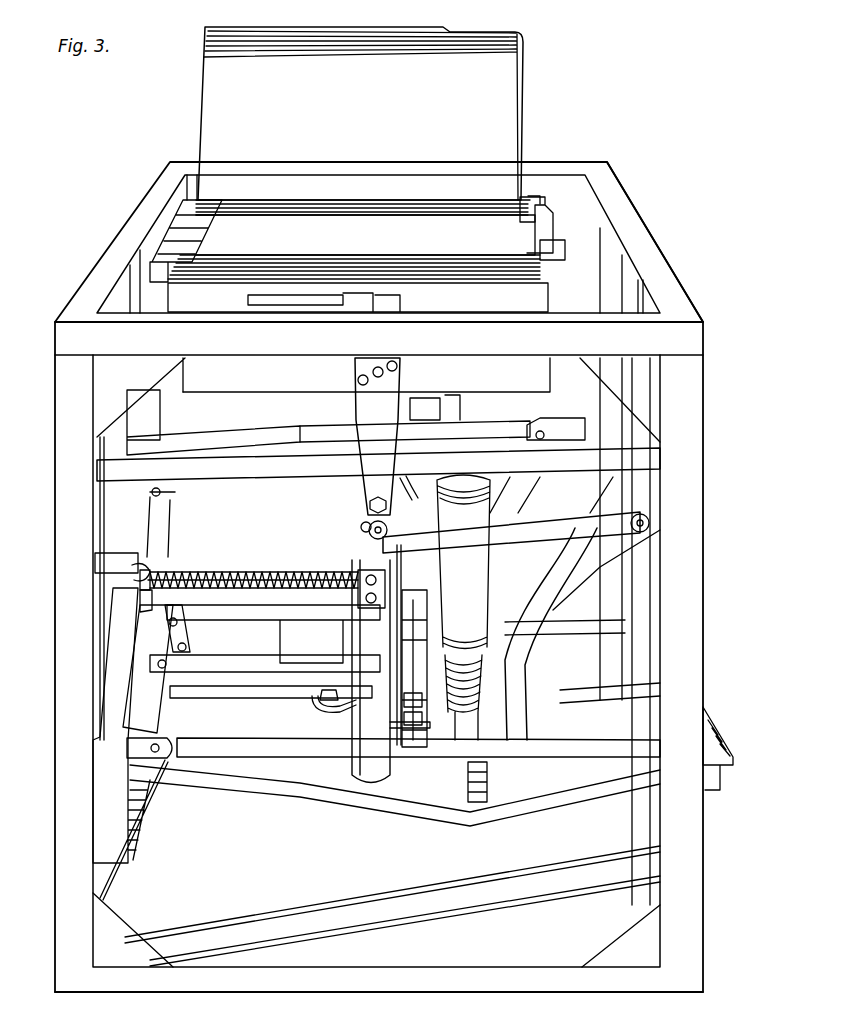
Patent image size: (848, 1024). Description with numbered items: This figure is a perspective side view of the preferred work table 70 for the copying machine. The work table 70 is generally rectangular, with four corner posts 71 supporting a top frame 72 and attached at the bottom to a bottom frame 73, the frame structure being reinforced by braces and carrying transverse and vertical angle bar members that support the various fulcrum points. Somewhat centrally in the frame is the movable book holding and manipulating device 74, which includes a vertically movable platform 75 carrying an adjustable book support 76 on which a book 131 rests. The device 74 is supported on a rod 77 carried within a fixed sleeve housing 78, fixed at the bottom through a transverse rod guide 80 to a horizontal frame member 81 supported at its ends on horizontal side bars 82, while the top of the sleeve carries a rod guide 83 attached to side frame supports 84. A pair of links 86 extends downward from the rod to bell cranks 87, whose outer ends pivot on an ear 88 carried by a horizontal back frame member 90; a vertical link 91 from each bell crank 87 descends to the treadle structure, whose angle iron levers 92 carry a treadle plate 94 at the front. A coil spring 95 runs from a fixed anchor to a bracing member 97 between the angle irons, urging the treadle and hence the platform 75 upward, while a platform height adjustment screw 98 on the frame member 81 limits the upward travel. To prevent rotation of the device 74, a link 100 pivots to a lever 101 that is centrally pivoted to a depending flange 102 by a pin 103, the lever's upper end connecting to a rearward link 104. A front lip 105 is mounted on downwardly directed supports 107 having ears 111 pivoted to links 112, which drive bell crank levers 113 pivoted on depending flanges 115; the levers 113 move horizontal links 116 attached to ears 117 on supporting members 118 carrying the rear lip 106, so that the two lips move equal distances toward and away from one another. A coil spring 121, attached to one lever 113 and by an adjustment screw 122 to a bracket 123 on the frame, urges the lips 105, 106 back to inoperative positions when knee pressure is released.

The work table 70 is at (659, 197).
The corner posts 71 is at (57, 396).
The top frame 72 is at (655, 258).
The bottom frame 73 is at (307, 993).
The book holding and manipulating device 74 is at (543, 190).
The platform 75 is at (484, 372).
The book support 76 is at (255, 300).
The rod 77 is at (392, 771).
The sleeve housing 78 is at (398, 556).
The rod guide 80 is at (322, 700).
The horizontal frame member 81 is at (420, 636).
The horizontal side bars 82 is at (430, 600).
The rod guide 83 is at (345, 388).
The side frame supports 84 is at (290, 467).
The links 86 is at (346, 712).
The bell cranks 87 is at (222, 708).
The ear 88 is at (190, 649).
The horizontal back frame member 90 is at (158, 712).
The link 91 is at (295, 580).
The angle iron levers 92 is at (571, 688).
The treadle plate 94 is at (720, 735).
The coil spring 95 is at (492, 585).
The bracing member 97 is at (488, 776).
The platform height adjustment screw 98 is at (483, 673).
The link 100 is at (468, 540).
The lever 101 is at (366, 530).
The depending flange 102 is at (366, 484).
The pin 103 is at (395, 535).
The link 104 is at (248, 440).
The front lip 105 is at (520, 222).
The rear lip 106 is at (198, 227).
The supports 107 is at (520, 498).
The ears 111 is at (551, 430).
The links 112 is at (422, 432).
The levers 113 is at (358, 572).
The depending flanges 115 is at (408, 485).
The links 116 is at (258, 572).
The ears 117 is at (143, 605).
The supporting members 118 is at (143, 404).
The coil spring 121 is at (250, 575).
The adjustment screw 122 is at (145, 565).
The bracket 123 is at (110, 563).
The book 131 is at (508, 83).